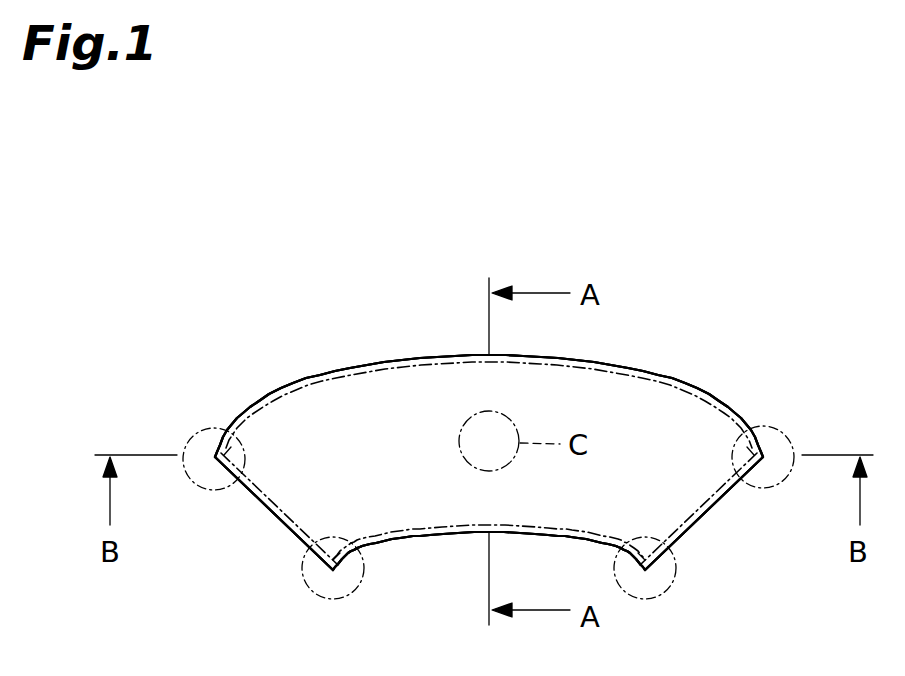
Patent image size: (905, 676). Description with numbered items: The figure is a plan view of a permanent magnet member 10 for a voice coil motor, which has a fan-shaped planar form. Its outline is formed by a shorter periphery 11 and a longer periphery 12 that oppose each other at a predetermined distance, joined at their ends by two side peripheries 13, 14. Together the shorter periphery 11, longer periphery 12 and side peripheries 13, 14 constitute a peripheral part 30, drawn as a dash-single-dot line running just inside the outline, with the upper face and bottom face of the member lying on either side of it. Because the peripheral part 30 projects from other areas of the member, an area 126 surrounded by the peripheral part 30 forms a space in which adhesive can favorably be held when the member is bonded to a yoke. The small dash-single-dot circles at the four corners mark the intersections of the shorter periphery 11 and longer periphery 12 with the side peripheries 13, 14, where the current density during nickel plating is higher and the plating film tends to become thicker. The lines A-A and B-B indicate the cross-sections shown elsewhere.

The permanent magnet member 10 is at (732, 399).
The shorter periphery 11 is at (430, 537).
The longer periphery 12 is at (393, 361).
The side periphery 13 is at (250, 497).
The side periphery 14 is at (700, 525).
The peripheral part 30 is at (603, 371).
The area surrounded by the peripheral part 126 is at (328, 435).